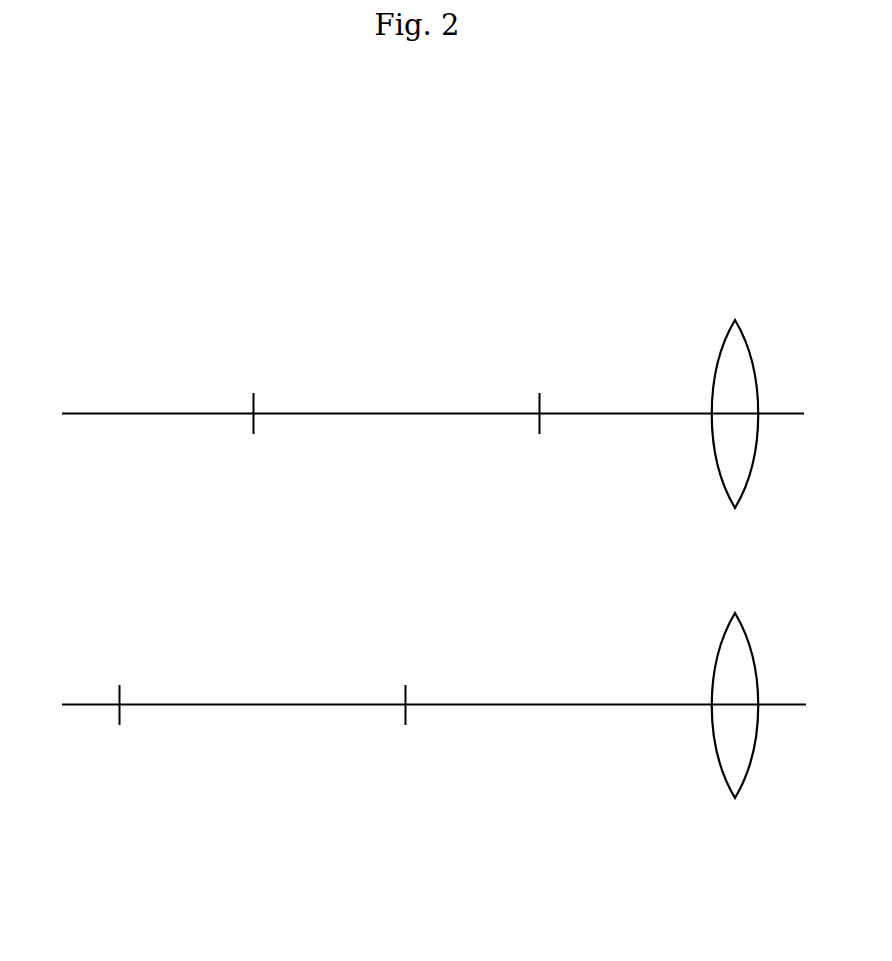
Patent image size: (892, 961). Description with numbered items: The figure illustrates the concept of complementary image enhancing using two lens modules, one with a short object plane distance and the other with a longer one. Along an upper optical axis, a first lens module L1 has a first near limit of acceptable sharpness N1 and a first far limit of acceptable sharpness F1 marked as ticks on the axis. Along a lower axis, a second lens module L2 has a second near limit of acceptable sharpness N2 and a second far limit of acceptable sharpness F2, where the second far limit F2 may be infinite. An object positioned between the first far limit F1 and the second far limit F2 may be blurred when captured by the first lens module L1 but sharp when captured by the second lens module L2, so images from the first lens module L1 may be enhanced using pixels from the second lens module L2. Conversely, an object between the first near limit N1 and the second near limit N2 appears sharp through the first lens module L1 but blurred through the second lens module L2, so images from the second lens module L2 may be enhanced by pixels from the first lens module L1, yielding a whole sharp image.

The first far limit of acceptable sharpness F1 is at (255, 390).
The first near limit of acceptable sharpness N1 is at (537, 389).
The first lens module L1 is at (735, 389).
The second far limit of acceptable sharpness F2 is at (125, 681).
The second near limit of acceptable sharpness N2 is at (405, 681).
The second lens module L2 is at (737, 733).